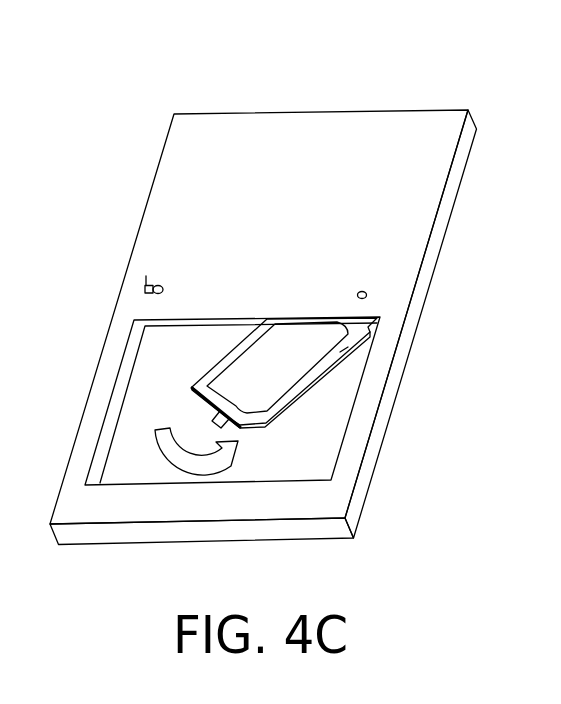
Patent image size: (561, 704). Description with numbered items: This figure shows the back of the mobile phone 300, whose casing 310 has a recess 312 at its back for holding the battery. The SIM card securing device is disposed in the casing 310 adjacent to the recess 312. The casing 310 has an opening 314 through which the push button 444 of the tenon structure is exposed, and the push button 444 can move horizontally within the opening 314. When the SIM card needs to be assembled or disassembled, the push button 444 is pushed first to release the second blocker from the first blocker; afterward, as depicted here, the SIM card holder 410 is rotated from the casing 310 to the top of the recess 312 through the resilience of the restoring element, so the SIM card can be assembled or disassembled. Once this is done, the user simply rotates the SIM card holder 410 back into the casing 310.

The mobile phone 300 is at (266, 275).
The casing 310 is at (283, 128).
The recess 312 is at (325, 430).
The opening 314 is at (142, 285).
The push button 444 is at (160, 285).
The SIM card holder 410 is at (365, 342).